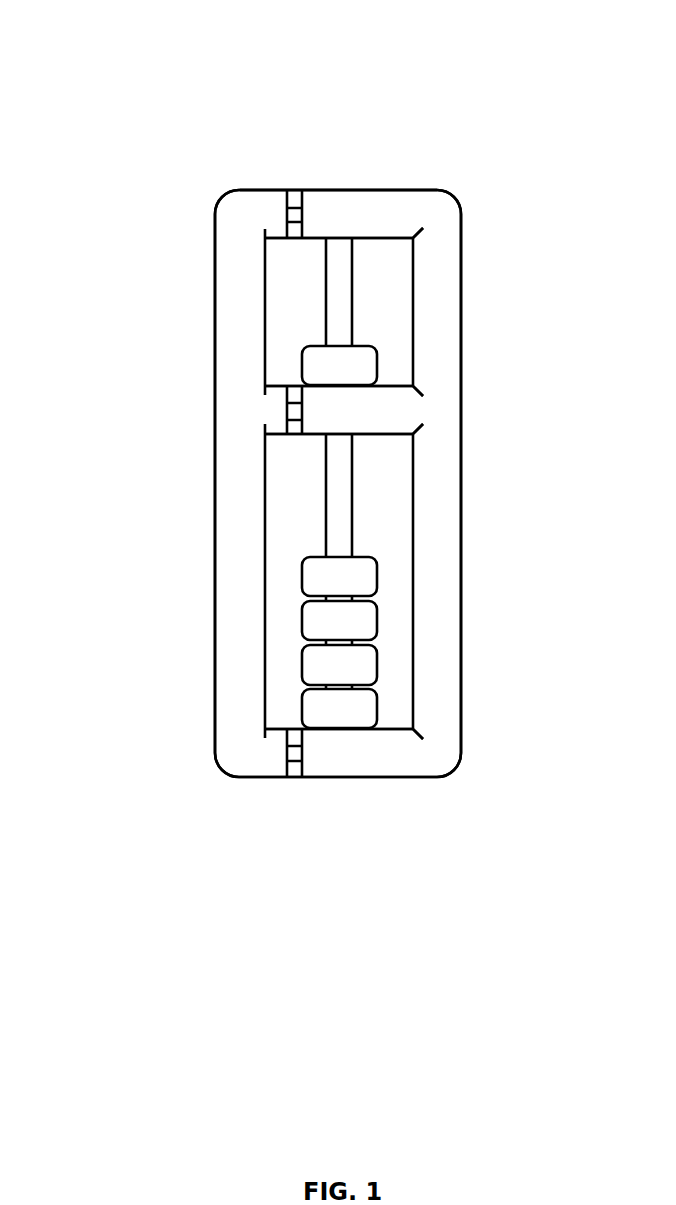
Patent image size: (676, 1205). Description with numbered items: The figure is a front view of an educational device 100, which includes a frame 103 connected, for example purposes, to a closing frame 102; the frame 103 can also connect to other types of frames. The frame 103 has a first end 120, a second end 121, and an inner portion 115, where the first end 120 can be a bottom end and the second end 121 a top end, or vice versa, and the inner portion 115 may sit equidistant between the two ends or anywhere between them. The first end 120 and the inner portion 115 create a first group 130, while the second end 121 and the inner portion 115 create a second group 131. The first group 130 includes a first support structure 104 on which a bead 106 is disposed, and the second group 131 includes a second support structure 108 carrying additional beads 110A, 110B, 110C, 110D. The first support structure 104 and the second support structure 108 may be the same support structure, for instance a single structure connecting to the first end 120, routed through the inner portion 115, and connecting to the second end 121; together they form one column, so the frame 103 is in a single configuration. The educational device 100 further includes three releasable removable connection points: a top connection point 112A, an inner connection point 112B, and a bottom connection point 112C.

The educational device 100 is at (125, 38).
The closing frame 102 is at (210, 197).
The frame 103 is at (433, 182).
The first support structure 104 is at (326, 322).
The bead 106 is at (302, 365).
The second support structure 108 is at (326, 482).
The additional bead 110A is at (302, 587).
The additional bead 110B is at (302, 628).
The additional bead 110C is at (302, 667).
The additional bead 110D is at (302, 708).
The top connection point 112A is at (293, 187).
The inner connection point 112B is at (287, 410).
The bottom connection point 112C is at (287, 753).
The inner portion 115 is at (373, 412).
The first end 120 is at (373, 213).
The second end 121 is at (373, 757).
The first group 130 is at (373, 314).
The second group 131 is at (392, 607).